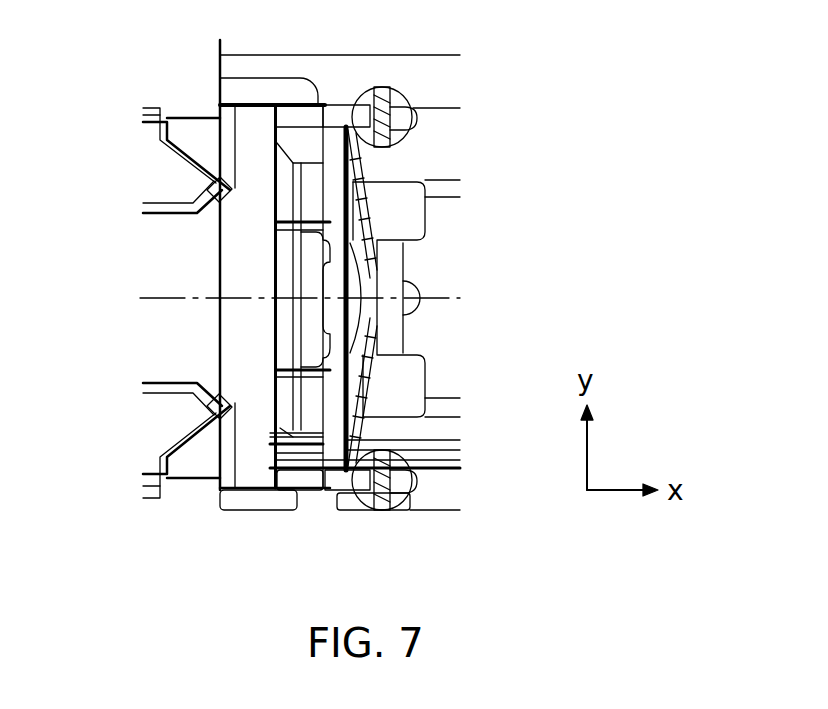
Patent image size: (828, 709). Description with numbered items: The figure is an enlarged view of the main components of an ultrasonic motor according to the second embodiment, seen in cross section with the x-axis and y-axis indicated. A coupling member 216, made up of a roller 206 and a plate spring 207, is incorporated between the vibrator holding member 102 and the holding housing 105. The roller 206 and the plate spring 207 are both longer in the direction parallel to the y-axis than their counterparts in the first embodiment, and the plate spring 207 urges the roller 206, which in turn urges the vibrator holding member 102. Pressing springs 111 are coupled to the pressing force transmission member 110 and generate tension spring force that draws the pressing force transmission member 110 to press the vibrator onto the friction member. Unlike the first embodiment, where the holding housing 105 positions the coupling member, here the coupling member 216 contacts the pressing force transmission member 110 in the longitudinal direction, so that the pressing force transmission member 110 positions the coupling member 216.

The vibrator holding member 102 is at (297, 315).
The holding housing 105 is at (393, 385).
The pressing force transmission member 110 is at (180, 273).
The pressing spring 111 is at (403, 92).
The roller 206 is at (333, 178).
The plate spring 207 is at (367, 215).
The coupling member 216 is at (500, 282).